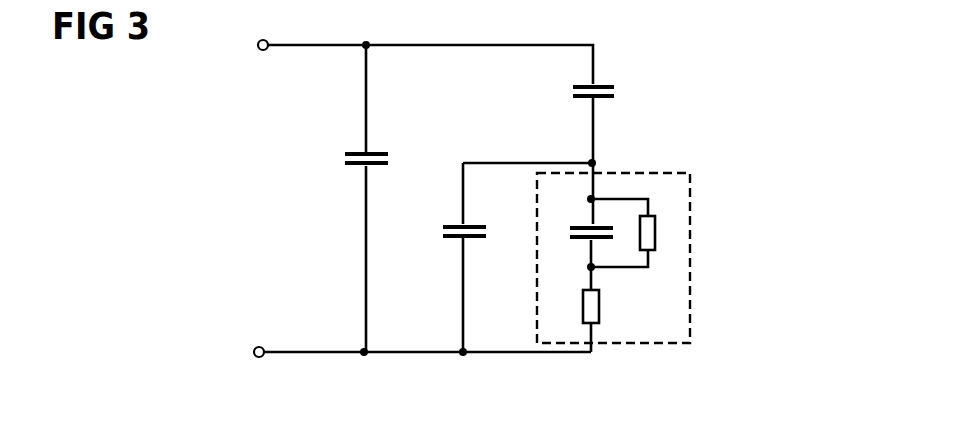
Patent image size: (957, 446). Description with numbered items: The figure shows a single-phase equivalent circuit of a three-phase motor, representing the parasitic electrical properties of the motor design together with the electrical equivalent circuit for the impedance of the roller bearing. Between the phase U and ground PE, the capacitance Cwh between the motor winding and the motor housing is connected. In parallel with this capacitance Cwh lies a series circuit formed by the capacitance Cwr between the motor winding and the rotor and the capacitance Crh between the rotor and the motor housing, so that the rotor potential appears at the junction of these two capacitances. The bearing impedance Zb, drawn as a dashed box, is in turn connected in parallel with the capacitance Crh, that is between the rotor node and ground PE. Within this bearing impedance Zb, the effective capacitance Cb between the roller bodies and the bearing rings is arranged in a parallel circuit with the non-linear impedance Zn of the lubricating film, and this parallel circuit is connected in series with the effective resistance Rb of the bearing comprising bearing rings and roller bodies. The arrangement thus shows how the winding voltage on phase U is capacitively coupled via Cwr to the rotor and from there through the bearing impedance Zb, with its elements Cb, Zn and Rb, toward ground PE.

The phase U is at (250, 47).
The ground PE is at (240, 353).
The capacitance between the motor winding and the motor housing Cwh is at (345, 163).
The capacitance between the motor winding and rotor Cwr is at (576, 96).
The capacitance between the rotor and the motor housing Crh is at (452, 237).
The effective capacitance between the roller bodies and the bearing rings Cb is at (589, 237).
The effective resistance of the bearing Rb is at (599, 306).
The non-linear impedance of the lubricating film Zn is at (656, 233).
The bearing impedance Zb is at (690, 298).